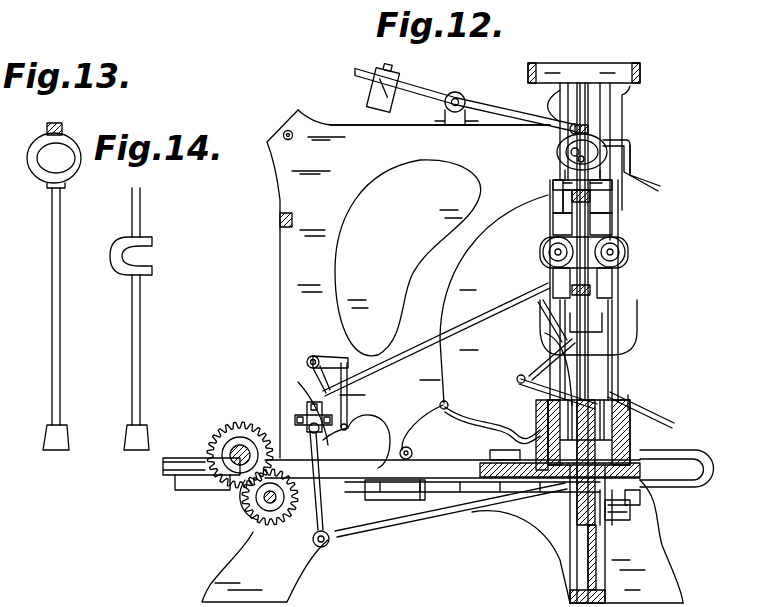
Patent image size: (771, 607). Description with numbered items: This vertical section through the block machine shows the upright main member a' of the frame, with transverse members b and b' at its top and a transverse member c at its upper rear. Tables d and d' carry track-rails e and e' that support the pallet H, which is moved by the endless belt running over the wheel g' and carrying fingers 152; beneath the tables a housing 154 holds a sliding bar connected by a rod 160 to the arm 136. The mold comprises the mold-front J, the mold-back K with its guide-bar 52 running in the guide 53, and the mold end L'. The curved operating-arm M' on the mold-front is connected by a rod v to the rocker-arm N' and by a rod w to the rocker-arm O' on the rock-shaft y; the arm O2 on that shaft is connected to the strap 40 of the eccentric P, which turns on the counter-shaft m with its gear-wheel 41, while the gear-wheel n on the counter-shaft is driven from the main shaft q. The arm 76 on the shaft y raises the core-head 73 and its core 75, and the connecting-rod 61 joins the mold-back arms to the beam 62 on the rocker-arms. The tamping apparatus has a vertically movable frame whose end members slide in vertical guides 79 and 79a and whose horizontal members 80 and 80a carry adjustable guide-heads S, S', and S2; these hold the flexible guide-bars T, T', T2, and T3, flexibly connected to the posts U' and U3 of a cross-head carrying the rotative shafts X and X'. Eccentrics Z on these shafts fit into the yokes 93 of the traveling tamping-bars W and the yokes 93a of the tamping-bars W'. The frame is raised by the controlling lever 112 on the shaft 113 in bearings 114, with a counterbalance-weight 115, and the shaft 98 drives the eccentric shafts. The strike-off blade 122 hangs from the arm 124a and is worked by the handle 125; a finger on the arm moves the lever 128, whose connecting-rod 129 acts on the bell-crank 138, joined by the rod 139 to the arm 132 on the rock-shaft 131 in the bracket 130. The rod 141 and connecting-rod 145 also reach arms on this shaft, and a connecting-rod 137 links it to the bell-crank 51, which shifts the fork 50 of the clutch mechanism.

In FIG. 12, the vertical guide 79a is at (592, 70).
In FIG. 12, the transverse member b is at (599, 72).
In FIG. 12, the transverse member b' is at (515, 71).
In FIG. 12, the shaft 113 is at (457, 92).
In FIG. 12, the counterbalance-weight 115 is at (370, 96).
In FIG. 12, the controlling handle or lever 112 is at (522, 122).
In FIG. 12, the rotative shaft 98 is at (286, 131).
In FIG. 12, the bearings 114 is at (462, 127).
In FIG. 13, the yoke 93a is at (79, 170).
In FIG. 12, the yoke 93a is at (600, 141).
In FIG. 12, the eccentric Z is at (520, 288).
In FIG. 12, the guide-head S is at (648, 160).
In FIG. 12, the guide-head S' is at (531, 186).
In FIG. 12, the flexible guide-bar T is at (599, 218).
In FIG. 12, the flexible guide-bar T3 is at (553, 201).
In FIG. 12, the post U3 is at (548, 224).
In FIG. 12, the horizontal member 80 is at (614, 197).
In FIG. 12, the flexible guide-bar T2 is at (614, 211).
In FIG. 12, the post U' is at (631, 228).
In FIG. 14, the yoke 93 is at (117, 250).
In FIG. 12, the yoke 93 is at (543, 253).
In FIG. 12, the rotative shaft X is at (618, 254).
In FIG. 12, the rotative shaft X' is at (522, 280).
In FIG. 12, the flexible guide-bar T' is at (554, 283).
In FIG. 12, the horizontal member 80a is at (606, 291).
In FIG. 12, the guide-head S2 is at (637, 313).
In FIG. 13, the tamping-bar W' is at (69, 319).
In FIG. 12, the tamping-bar W' is at (614, 350).
In FIG. 14, the traveling tamping-bar W is at (148, 319).
In FIG. 12, the traveling tamping-bar W is at (638, 350).
In FIG. 12, the rod w is at (395, 550).
In FIG. 12, the mold end L' is at (637, 393).
In FIG. 12, the core 75 is at (642, 405).
In FIG. 12, the mold-front J is at (632, 420).
In FIG. 12, the handle 125 is at (675, 420).
In FIG. 12, the pallet H is at (632, 439).
In FIG. 12, the mold-back K is at (536, 412).
In FIG. 12, the table d is at (501, 468).
In FIG. 12, the curved operating-arm M' is at (556, 524).
In FIG. 12, the track-rail e is at (625, 534).
In FIG. 12, the housing 154 is at (640, 506).
In FIG. 12, the fingers 152 is at (632, 540).
In FIG. 12, the wheel g' is at (613, 523).
In FIG. 12, the core-head 73 is at (585, 531).
In FIG. 12, the track-rail e' is at (516, 527).
In FIG. 12, the rod 160 is at (467, 503).
In FIG. 12, the table d' is at (472, 519).
In FIG. 12, the rod v is at (386, 516).
In FIG. 12, the arm 76 is at (398, 532).
In FIG. 12, the rocker-arm N' is at (345, 563).
In FIG. 12, the rock-shaft y is at (322, 548).
In FIG. 12, the vertical guide 79 is at (376, 600).
In FIG. 12, the connecting-rod 145 is at (446, 470).
In FIG. 12, the guide 53 is at (463, 458).
In FIG. 12, the guide-bar 52 is at (505, 462).
In FIG. 12, the rod 141 is at (405, 446).
In FIG. 12, the beam 62 is at (441, 404).
In FIG. 12, the connecting-rod 61 is at (461, 410).
In FIG. 12, the strike-off blade 122 is at (536, 396).
In FIG. 12, the arm 124a is at (548, 361).
In FIG. 12, the lever 128 is at (545, 322).
In FIG. 12, the connecting-rod 129 is at (452, 336).
In FIG. 12, the bell-crank 138 is at (328, 353).
In FIG. 12, the bracket 130 is at (300, 391).
In FIG. 12, the rod 139 is at (348, 399).
In FIG. 12, the rock-shaft 131 is at (311, 413).
In FIG. 12, the arm 132 is at (348, 430).
In FIG. 12, the arm 136 is at (319, 450).
In FIG. 12, the eccentric P is at (240, 426).
In FIG. 12, the main shaft q is at (235, 450).
In FIG. 12, the rocker-arm O' is at (265, 492).
In FIG. 12, the arm O2 is at (362, 492).
In FIG. 12, the gear-wheel n is at (277, 523).
In FIG. 12, the strap 40 is at (258, 511).
In FIG. 12, the gear-wheel 41 is at (279, 513).
In FIG. 12, the counter-shaft m is at (262, 543).
In FIG. 12, the connecting-rod 137 is at (195, 457).
In FIG. 12, the bell-crank 51 is at (168, 468).
In FIG. 12, the fork 50 is at (205, 476).
In FIG. 12, the upright main member a' is at (408, 284).
In FIG. 12, the transverse member c is at (278, 220).